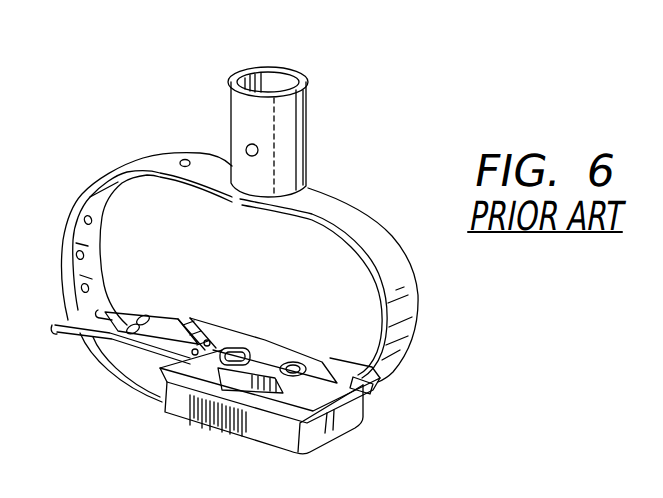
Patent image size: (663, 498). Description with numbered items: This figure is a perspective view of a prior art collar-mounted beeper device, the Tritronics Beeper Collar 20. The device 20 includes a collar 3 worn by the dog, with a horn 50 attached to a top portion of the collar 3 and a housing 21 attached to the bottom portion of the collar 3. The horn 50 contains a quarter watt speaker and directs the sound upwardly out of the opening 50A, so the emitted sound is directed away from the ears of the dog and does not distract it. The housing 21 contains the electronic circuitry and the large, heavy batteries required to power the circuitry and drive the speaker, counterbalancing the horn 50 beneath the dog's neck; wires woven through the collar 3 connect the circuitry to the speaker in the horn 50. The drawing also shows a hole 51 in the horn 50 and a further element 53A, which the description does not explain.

The beeper collar 20 is at (137, 428).
The collar 3 is at (90, 227).
The horn 50 is at (309, 127).
The opening 50A is at (280, 80).
The hole in collar 51 is at (245, 149).
The housing 21 is at (303, 443).
The element 53A is at (598, 497).